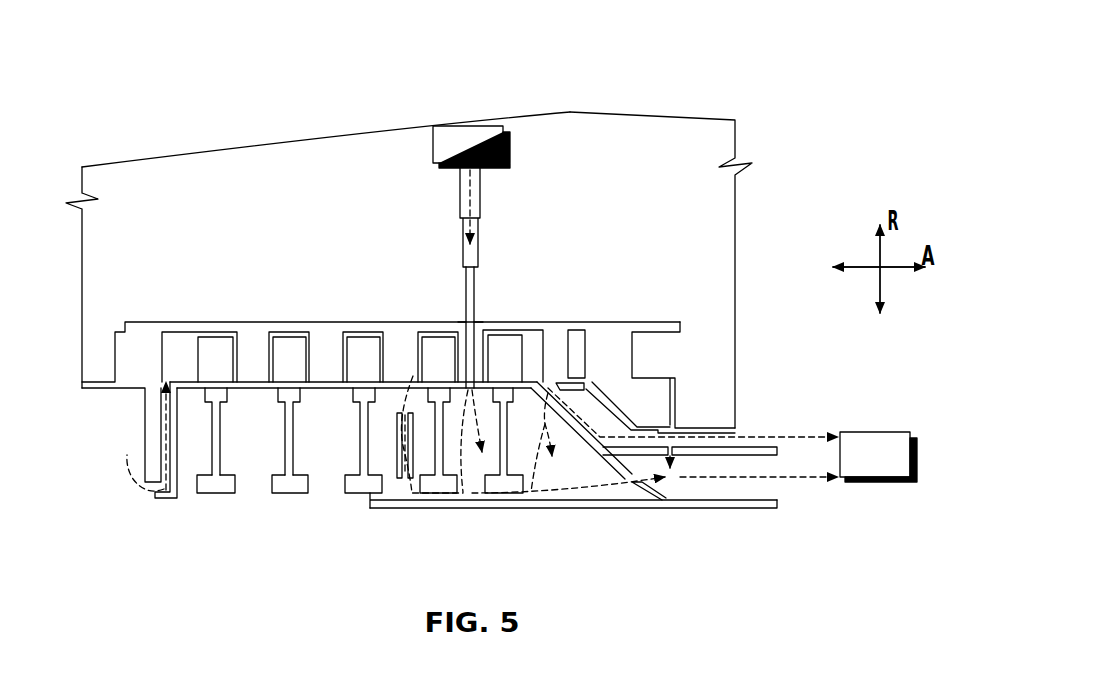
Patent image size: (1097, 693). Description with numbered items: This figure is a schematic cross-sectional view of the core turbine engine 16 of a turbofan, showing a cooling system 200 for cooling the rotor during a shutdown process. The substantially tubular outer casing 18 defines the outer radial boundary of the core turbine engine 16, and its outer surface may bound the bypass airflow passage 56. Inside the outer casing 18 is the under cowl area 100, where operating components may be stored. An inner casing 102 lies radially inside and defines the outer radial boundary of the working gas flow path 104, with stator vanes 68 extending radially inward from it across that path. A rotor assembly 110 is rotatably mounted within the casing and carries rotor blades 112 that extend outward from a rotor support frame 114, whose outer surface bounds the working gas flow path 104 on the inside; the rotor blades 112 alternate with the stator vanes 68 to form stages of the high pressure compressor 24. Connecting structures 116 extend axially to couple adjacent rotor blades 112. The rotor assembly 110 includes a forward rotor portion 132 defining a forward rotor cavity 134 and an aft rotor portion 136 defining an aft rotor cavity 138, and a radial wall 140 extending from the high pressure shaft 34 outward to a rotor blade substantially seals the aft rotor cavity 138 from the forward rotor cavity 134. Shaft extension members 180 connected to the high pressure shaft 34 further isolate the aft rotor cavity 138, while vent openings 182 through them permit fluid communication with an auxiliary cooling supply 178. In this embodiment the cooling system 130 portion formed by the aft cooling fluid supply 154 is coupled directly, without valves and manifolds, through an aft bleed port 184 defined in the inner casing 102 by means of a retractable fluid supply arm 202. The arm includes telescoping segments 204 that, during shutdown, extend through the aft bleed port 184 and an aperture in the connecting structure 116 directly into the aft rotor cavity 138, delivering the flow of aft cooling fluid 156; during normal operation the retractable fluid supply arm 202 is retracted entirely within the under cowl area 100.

The core turbine engine 16 is at (748, 84).
The outer casing 18 is at (615, 111).
The high pressure compressor 24 is at (222, 241).
The high pressure shaft 34 is at (544, 502).
The bypass airflow passage 56 is at (469, 84).
The stator vanes 68 is at (328, 340).
The under cowl area 100 is at (335, 189).
The inner casing 102 is at (285, 320).
The working gas flow path 104 is at (267, 336).
The rotor assembly 110 is at (288, 506).
The rotor blades 112 is at (367, 345).
The rotor support frame 114 is at (211, 492).
The connecting structure 116 is at (332, 389).
The cooling system 130 is at (529, 136).
The forward rotor portion 132 is at (153, 538).
The forward rotor cavity 134 is at (233, 421).
The aft rotor portion 136 is at (741, 515).
The aft rotor cavity 138 is at (559, 474).
The radial wall 140 is at (379, 499).
The aft cooling fluid supply 154 is at (450, 161).
The flow of aft cooling fluid 156 is at (482, 203).
The auxiliary cooling supply 178 is at (858, 467).
The shaft extension members 180 is at (564, 431).
The vent openings 182 is at (682, 461).
The aft bleed port 184 is at (460, 317).
The cooling system 200 is at (649, 196).
The retractable fluid supply arm 202 is at (489, 243).
The telescoping segments 204 is at (476, 293).